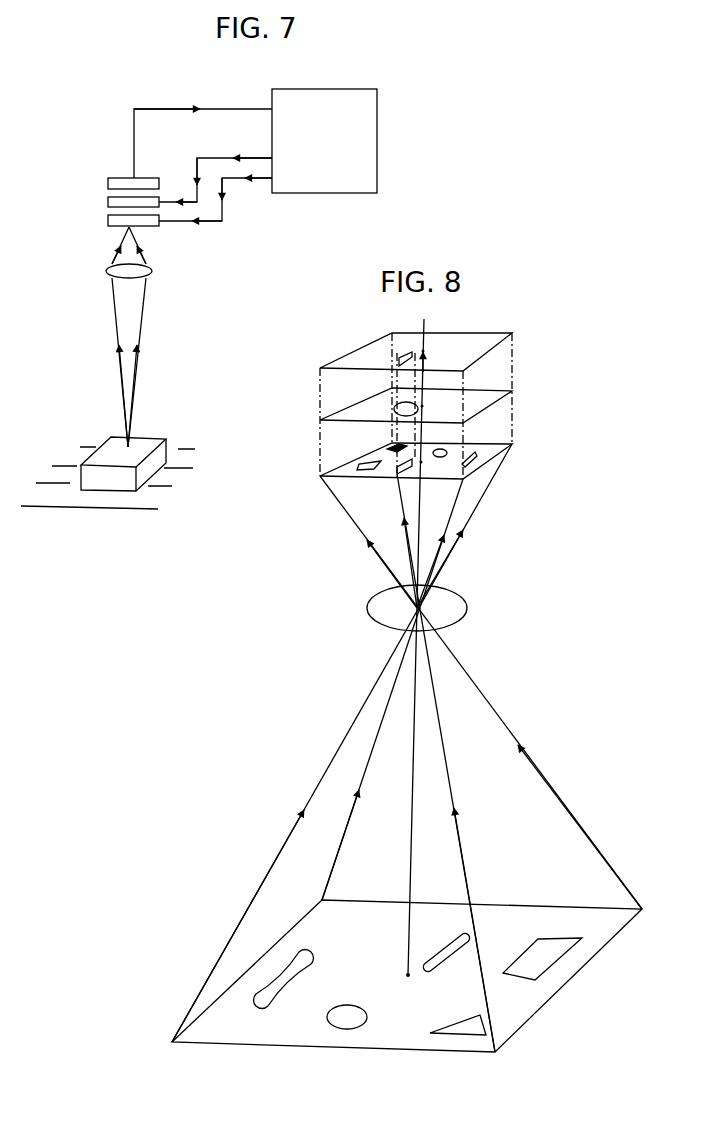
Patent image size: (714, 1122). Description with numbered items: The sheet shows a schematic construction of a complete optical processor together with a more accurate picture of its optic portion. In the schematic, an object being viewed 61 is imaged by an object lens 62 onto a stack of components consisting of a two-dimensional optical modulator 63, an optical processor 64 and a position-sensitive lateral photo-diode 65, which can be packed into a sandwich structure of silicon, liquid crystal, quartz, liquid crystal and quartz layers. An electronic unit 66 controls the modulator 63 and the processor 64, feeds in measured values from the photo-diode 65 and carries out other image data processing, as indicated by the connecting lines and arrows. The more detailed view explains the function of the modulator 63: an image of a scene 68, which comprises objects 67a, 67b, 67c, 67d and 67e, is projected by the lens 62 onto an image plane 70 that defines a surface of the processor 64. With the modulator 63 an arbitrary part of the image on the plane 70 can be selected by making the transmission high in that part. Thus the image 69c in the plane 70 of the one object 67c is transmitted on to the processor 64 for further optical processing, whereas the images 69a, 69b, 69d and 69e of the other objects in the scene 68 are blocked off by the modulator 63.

In FIG. 7, the object being viewed 61 is at (151, 444).
In FIG. 7, the object lens 62 is at (152, 272).
In FIG. 8, the object lens 62 is at (467, 607).
In FIG. 7, the two-dimensional optical modulator 63 is at (108, 220).
In FIG. 8, the two-dimensional optical modulator 63 is at (496, 400).
In FIG. 7, the optical processor 64 is at (108, 202).
In FIG. 8, the optical processor 64 is at (492, 349).
In FIG. 7, the position-sensitive lateral photo-diode 65 is at (108, 183).
In FIG. 7, the electronic unit 66 is at (322, 90).
In FIG. 8, the object 67a is at (262, 986).
In FIG. 8, the object 67b is at (342, 1020).
In FIG. 8, the object 67c is at (466, 938).
In FIG. 8, the object 67d is at (543, 958).
In FIG. 8, the object 67e is at (467, 1032).
In FIG. 8, the scene 68 is at (563, 988).
In FIG. 8, the image 69a is at (478, 457).
In FIG. 8, the image 69b is at (447, 453).
In FIG. 8, the image 69c is at (407, 473).
In FIG. 8, the image 69d is at (360, 470).
In FIG. 8, the image 69e is at (392, 449).
In FIG. 8, the image plane 70 is at (508, 449).